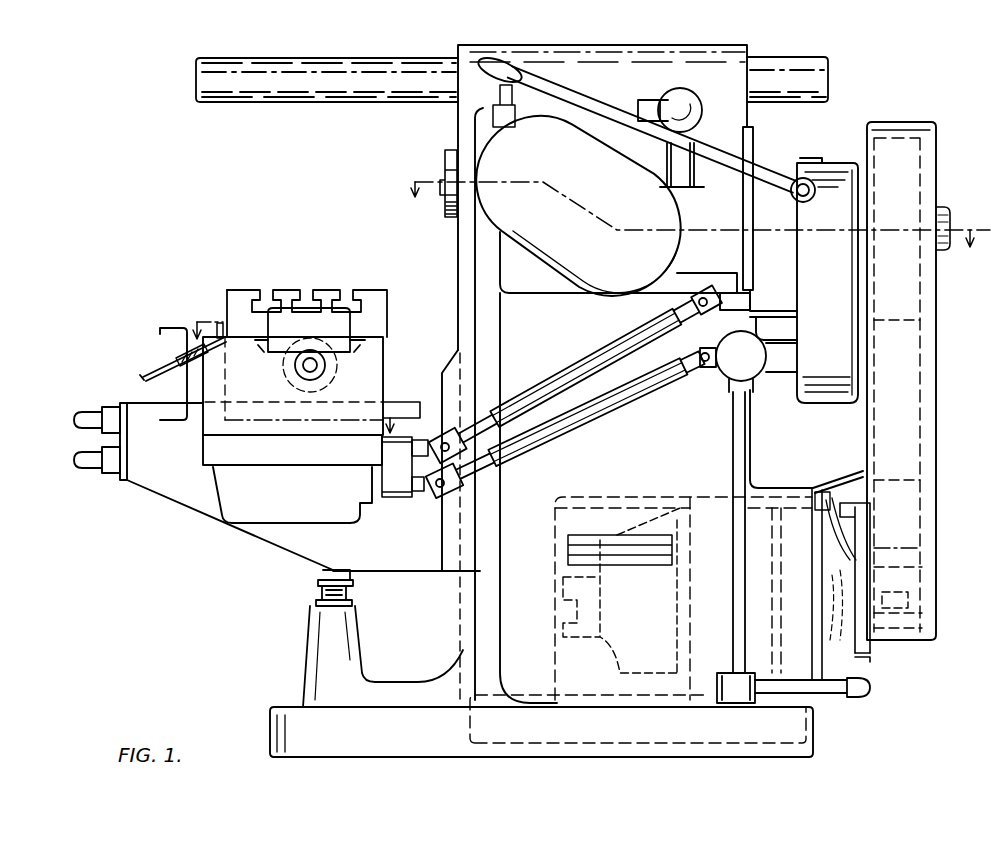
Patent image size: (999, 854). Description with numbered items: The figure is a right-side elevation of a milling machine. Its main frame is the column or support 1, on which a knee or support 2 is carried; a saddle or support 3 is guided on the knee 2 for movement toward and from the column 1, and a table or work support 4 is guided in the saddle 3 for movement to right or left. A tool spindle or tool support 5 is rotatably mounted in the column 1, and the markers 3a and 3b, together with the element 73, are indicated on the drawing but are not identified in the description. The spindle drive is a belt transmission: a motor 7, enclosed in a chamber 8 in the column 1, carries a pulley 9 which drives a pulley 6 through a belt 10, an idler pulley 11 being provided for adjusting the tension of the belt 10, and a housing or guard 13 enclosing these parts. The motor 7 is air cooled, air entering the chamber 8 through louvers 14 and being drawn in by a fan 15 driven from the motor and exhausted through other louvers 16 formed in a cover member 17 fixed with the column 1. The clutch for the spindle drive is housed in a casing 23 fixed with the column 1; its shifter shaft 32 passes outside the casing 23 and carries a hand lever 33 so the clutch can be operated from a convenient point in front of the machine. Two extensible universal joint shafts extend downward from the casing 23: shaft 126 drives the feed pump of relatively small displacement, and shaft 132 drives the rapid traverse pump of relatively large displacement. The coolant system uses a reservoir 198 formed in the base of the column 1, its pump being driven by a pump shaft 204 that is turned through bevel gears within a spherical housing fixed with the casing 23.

The column 1 is at (457, 252).
The knee 2 is at (200, 497).
The saddle 3 is at (378, 348).
The section line 3a is at (697, 227).
The section line 3b is at (296, 362).
The table 4 is at (383, 292).
The tool spindle 5 is at (446, 160).
The pulley 6 is at (912, 313).
The motor 7 is at (612, 664).
The chamber 8 is at (607, 495).
The pulley 9 is at (910, 573).
The belt 10 is at (902, 360).
The idler pulley 11 is at (902, 480).
The housing or guard 13 is at (927, 513).
The louvers 14 is at (630, 556).
The fan 15 is at (822, 548).
The louvers 16 is at (862, 660).
The cover member 17 is at (872, 656).
The casing 23 is at (812, 163).
The shaft 32 is at (800, 202).
The hand lever 33 is at (550, 93).
The knob 73 is at (683, 92).
The extensible universal joint shaft 126 is at (600, 348).
The extensible universal joint shaft 132 is at (630, 402).
The reservoir 198 is at (640, 733).
The pump shaft 204 is at (735, 462).